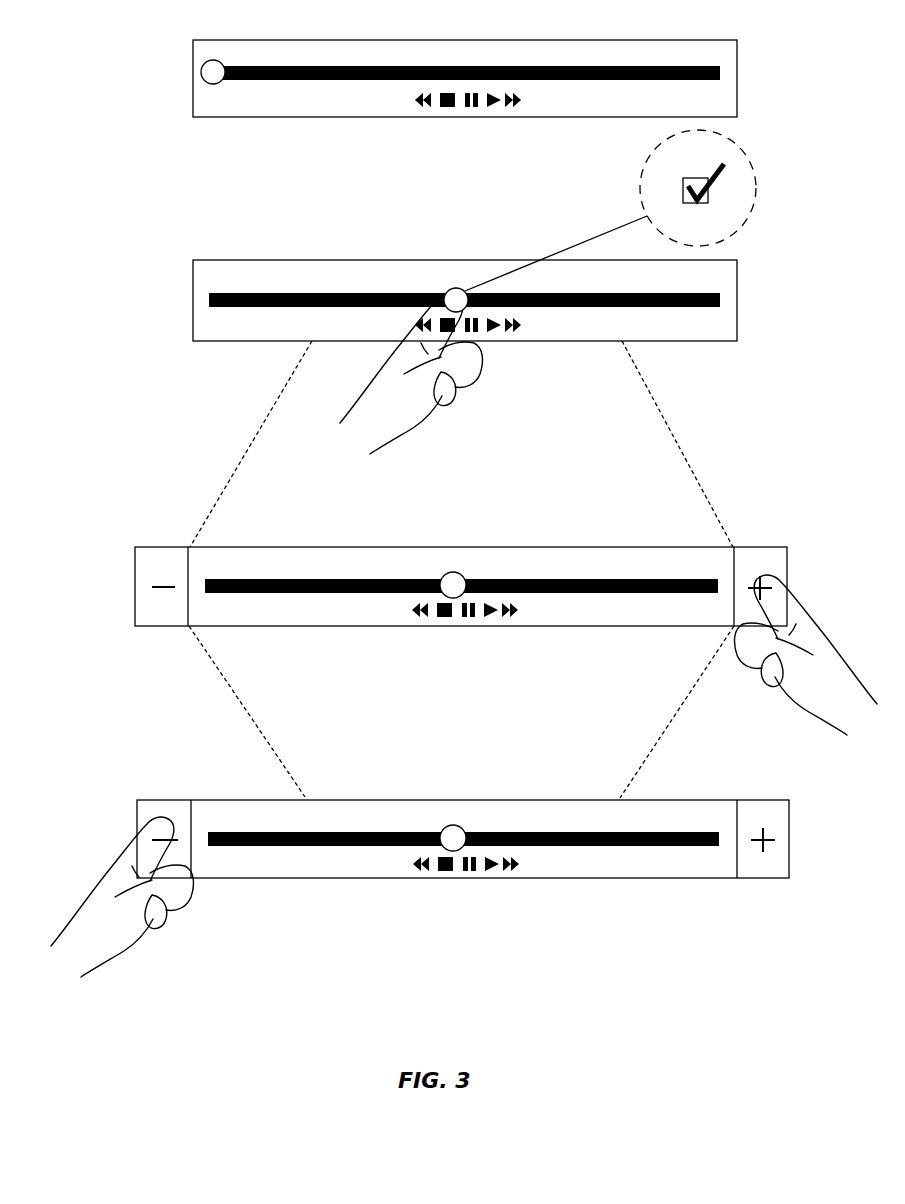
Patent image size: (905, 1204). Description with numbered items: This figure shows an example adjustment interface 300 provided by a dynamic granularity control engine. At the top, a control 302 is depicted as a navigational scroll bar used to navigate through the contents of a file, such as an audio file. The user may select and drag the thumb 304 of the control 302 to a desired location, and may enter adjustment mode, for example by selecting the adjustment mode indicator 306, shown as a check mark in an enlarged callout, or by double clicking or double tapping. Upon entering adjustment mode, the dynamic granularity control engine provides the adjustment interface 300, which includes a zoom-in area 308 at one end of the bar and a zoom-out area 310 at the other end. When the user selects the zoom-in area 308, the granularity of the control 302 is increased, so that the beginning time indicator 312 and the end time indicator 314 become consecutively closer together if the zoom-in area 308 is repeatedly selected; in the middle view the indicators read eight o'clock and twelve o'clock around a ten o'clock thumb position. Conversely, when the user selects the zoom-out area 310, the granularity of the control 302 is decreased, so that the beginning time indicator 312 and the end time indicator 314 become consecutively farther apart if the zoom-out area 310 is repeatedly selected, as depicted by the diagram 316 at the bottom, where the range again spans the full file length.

The adjustment interface 300 is at (464, 508).
The control 302 is at (461, 37).
The thumb 304 is at (446, 291).
The adjustment mode indicator 306 is at (709, 165).
The zoom-in area 308 is at (784, 565).
The zoom-out area 310 is at (141, 566).
The beginning time indicator 312 is at (216, 627).
The end time indicator 314 is at (677, 614).
The diagram 316 is at (664, 796).